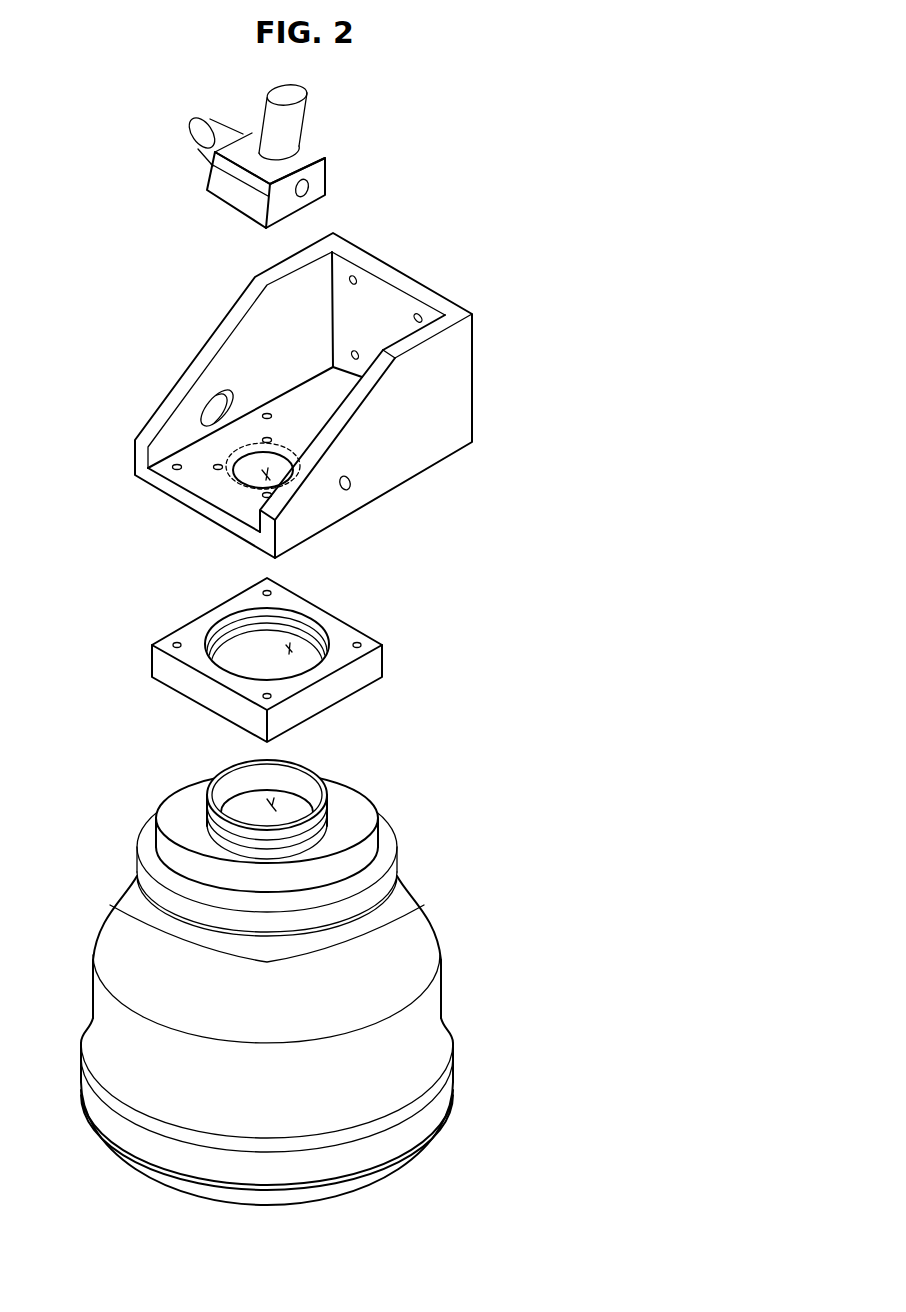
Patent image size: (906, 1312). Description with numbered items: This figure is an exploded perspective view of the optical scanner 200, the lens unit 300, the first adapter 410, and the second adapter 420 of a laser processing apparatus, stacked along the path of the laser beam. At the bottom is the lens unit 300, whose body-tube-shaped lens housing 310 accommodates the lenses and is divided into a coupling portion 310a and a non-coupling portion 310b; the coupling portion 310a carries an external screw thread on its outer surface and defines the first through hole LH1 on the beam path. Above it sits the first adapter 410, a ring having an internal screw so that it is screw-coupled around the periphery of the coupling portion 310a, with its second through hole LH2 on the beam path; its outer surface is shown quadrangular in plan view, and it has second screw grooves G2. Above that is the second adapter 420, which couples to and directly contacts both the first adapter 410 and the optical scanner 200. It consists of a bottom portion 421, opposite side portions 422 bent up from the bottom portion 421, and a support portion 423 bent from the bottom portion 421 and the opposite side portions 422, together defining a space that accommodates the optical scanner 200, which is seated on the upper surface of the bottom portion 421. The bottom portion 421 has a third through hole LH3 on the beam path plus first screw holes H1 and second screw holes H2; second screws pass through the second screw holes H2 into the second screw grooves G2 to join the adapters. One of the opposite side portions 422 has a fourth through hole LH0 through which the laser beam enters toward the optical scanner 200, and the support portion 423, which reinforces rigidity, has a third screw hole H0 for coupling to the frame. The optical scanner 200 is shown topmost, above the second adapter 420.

The optical scanner 200 is at (227, 176).
The second adapter 420 is at (284, 398).
The bottom portion 421 is at (225, 533).
The opposite side portions 422 is at (350, 405).
The support portion 423 is at (368, 263).
The third screw hole H0 is at (414, 318).
The first screw holes H1 is at (216, 472).
The second screw holes H2 is at (178, 464).
The fourth through hole LH0 is at (350, 483).
The third through hole LH3 is at (273, 482).
The first adapter 410 is at (257, 658).
The second through hole LH2 is at (290, 648).
The second screw grooves G2 is at (367, 637).
The lens unit 300 is at (309, 971).
The lens housing 310 is at (364, 836).
The coupling portion 310a is at (371, 798).
The non-coupling portion 310b is at (353, 878).
The first through hole LH1 is at (276, 808).